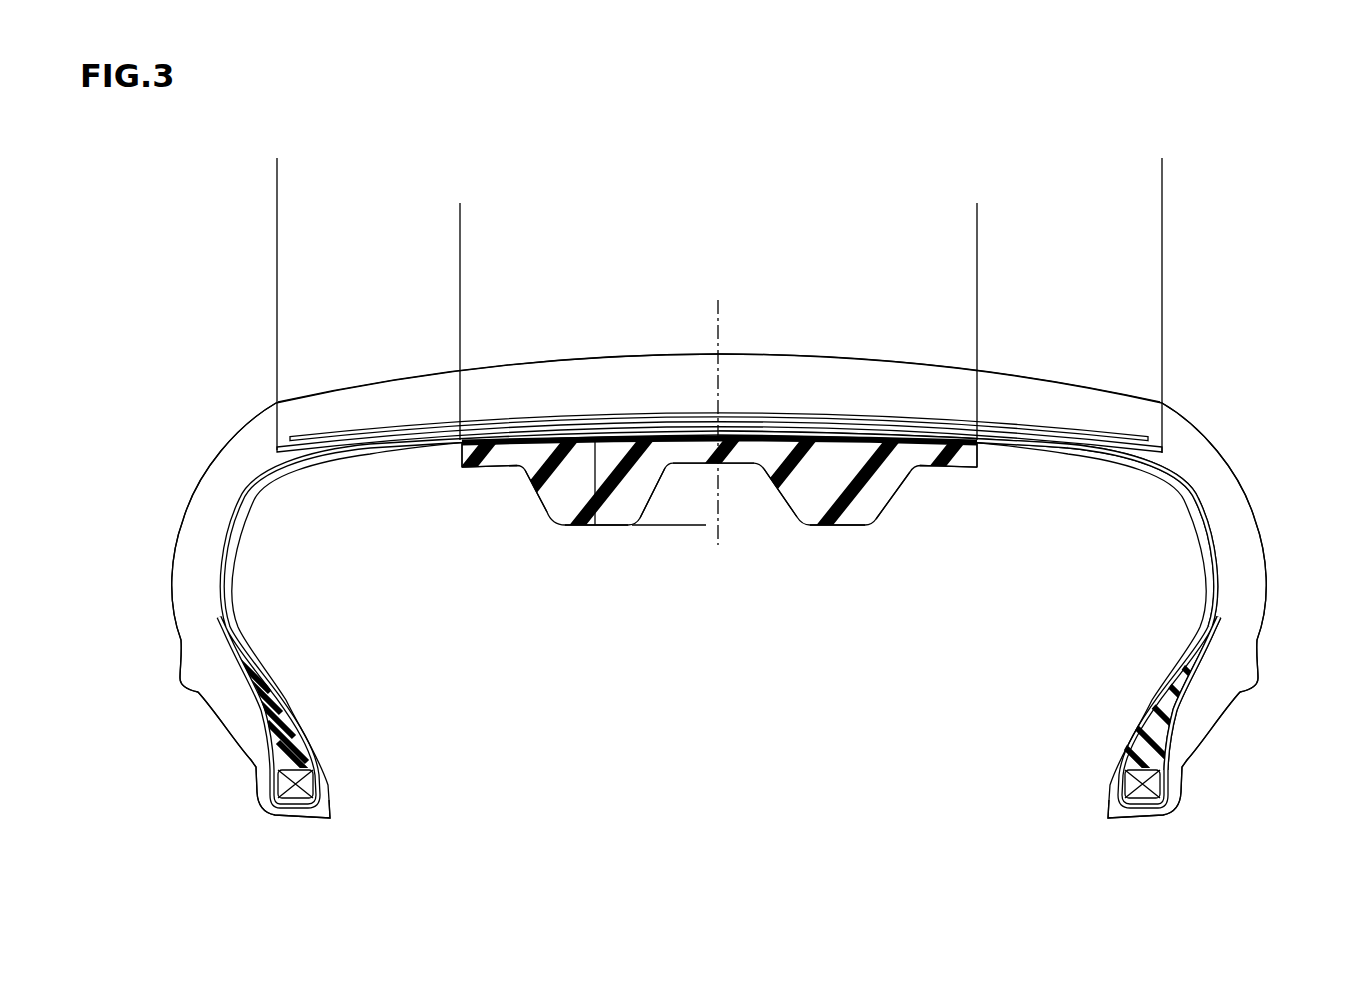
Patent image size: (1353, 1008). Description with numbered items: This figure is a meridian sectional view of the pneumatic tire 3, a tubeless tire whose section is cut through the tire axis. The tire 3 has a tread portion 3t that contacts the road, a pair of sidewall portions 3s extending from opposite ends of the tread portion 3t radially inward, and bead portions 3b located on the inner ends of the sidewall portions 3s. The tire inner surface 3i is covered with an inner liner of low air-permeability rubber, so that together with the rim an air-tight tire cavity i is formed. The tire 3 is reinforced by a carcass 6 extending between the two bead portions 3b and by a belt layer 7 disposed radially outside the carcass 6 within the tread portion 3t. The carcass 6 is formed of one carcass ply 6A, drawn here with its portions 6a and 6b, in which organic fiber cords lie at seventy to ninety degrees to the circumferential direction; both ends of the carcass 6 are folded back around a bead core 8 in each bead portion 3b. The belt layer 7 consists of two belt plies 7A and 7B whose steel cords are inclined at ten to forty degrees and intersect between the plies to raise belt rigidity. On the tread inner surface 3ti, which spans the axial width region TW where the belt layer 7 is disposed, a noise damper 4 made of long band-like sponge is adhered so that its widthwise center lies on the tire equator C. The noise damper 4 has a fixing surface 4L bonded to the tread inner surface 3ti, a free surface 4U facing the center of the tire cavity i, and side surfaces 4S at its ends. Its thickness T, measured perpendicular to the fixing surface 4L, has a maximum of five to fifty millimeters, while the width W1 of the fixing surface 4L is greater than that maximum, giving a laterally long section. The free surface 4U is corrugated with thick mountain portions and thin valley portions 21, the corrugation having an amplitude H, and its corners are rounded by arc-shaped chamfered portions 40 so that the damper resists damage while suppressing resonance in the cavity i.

The tire 3 is at (1193, 330).
The tread portion 3t is at (801, 350).
The sidewall portion 3s is at (161, 579).
The bead portion 3b is at (247, 768).
The tire inner surface 3i is at (258, 657).
The tread inner surface 3ti is at (517, 467).
The noise damper 4 is at (717, 466).
The fixing surface 4L is at (557, 434).
The free surface 4U is at (599, 530).
The side surface 4S is at (457, 453).
The valley portion 21 is at (485, 471).
The chamfered portion 40 is at (919, 468).
The carcass 6 is at (893, 439).
The carcass ply 6A is at (1108, 548).
The carcass ply main body portion 6a is at (1217, 568).
The carcass ply turn-up portion 6b is at (1210, 633).
The belt layer 7 is at (719, 354).
The belt ply 7A is at (1074, 441).
The belt ply 7B is at (1018, 424).
The bead core 8 is at (308, 788).
The width region TW is at (1161, 172).
The width of fixing surface W1 is at (461, 216).
The tire equator C is at (716, 406).
The amplitude H is at (690, 441).
The thickness T is at (597, 527).
The tire cavity i is at (712, 712).